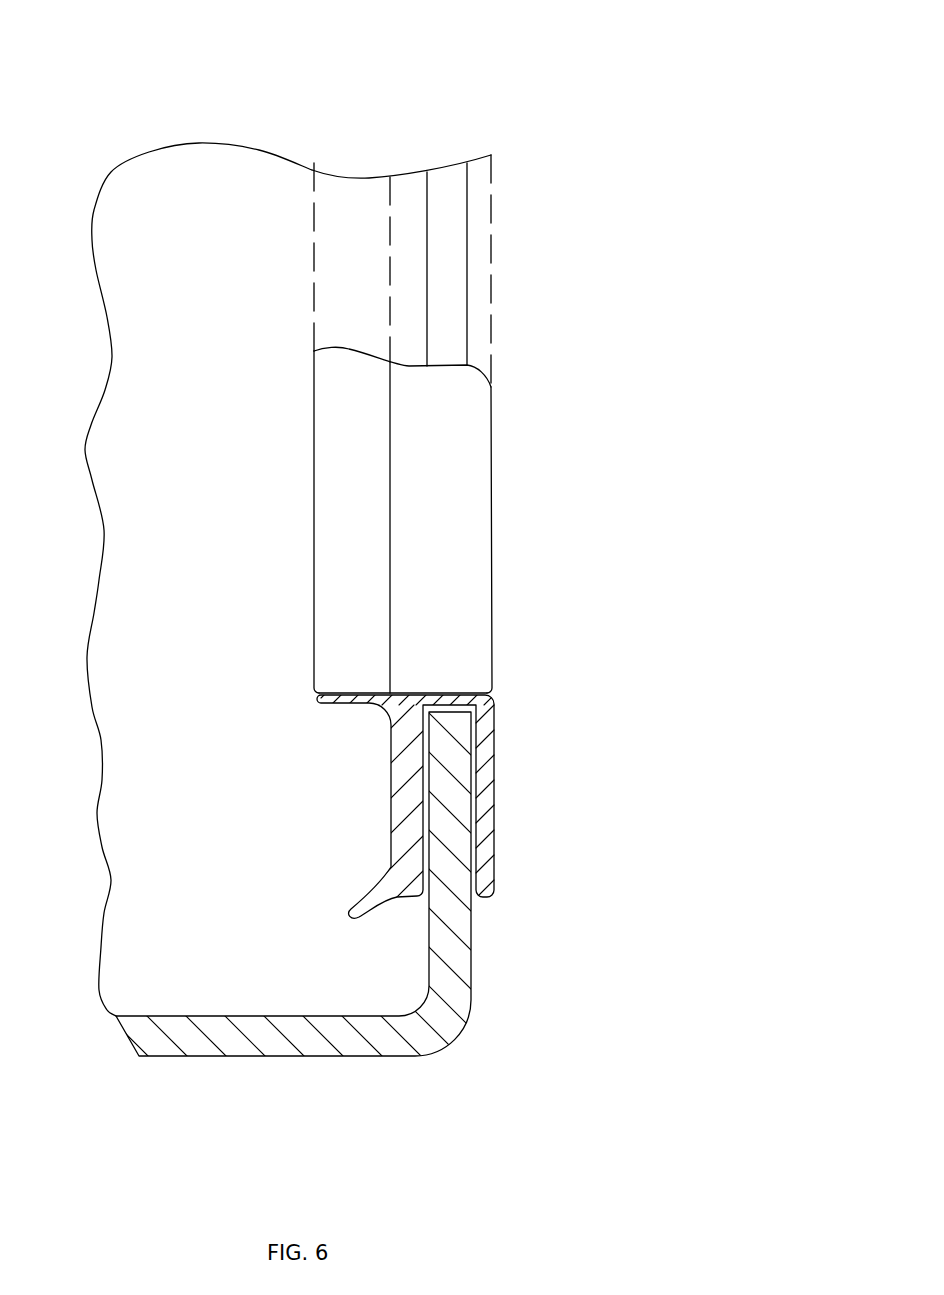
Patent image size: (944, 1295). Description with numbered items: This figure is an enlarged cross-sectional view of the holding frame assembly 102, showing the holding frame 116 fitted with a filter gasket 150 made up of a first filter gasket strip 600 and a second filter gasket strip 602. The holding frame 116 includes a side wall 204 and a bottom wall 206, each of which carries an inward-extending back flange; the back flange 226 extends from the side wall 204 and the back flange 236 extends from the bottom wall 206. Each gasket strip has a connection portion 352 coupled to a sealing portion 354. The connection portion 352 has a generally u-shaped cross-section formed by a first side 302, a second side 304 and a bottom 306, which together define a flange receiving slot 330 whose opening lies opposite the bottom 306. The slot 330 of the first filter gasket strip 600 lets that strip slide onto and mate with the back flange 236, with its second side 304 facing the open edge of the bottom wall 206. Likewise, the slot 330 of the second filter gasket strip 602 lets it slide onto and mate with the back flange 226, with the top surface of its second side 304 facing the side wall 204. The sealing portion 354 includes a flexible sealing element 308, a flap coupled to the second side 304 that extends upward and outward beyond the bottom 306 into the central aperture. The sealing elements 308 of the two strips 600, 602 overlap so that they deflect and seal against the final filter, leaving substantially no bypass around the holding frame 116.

The holding frame assembly 102 is at (483, 97).
The holding frame 116 is at (360, 921).
The filter gasket 150 is at (288, 818).
The side wall 204 is at (260, 200).
The bottom wall 206 is at (280, 1058).
The back flange 226 is at (460, 227).
The back flange 236 is at (360, 921).
The first side 302 is at (497, 797).
The second side 304 is at (392, 845).
The bottom 306 is at (493, 517).
The sealing element 308 is at (331, 443).
The flange receiving slot 330 is at (475, 878).
The connection portion 352 is at (478, 596).
The sealing portion 354 is at (302, 590).
The first filter gasket strip 600 is at (442, 812).
The second filter gasket strip 602 is at (402, 476).